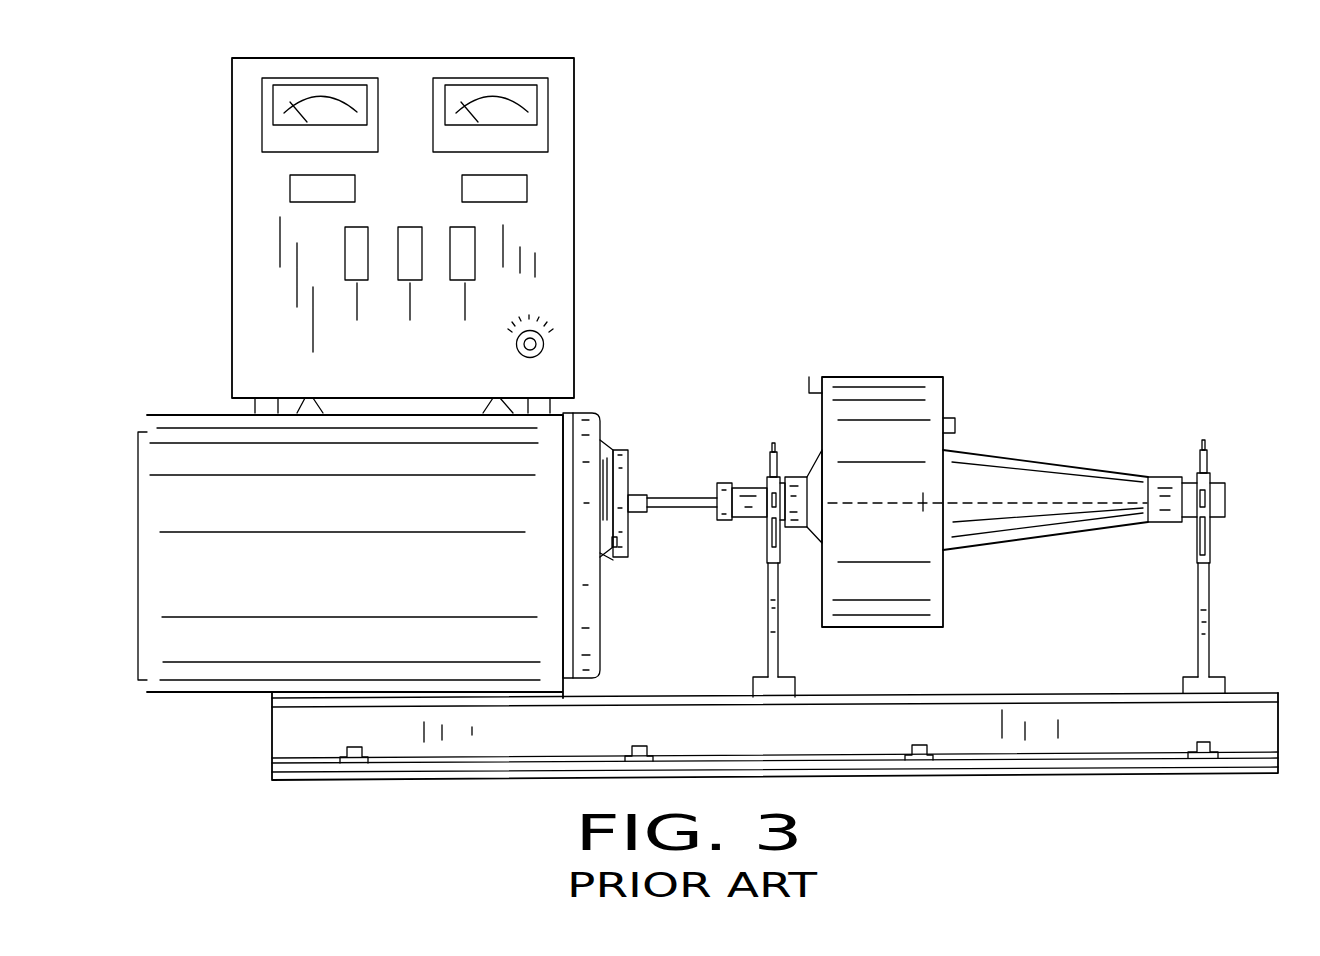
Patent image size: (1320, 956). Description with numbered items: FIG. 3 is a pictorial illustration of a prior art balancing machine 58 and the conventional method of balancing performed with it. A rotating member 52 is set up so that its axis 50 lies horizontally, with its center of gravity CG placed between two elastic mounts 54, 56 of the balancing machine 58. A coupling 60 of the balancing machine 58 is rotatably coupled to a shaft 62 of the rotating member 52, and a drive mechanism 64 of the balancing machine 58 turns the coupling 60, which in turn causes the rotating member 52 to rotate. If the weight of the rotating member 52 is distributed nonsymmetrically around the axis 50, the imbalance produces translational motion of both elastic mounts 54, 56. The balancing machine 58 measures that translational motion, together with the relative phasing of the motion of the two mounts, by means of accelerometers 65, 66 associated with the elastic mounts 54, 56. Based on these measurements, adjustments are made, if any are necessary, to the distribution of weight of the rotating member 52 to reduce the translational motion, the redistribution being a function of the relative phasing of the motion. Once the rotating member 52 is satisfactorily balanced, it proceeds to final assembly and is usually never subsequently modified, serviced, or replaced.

The axis 50 is at (1025, 498).
The rotating member 52 is at (873, 627).
The elastic mount 54 is at (770, 442).
The elastic mount 56 is at (1200, 437).
The balancing machine 58 is at (647, 212).
The coupling 60 is at (688, 505).
The shaft 62 is at (748, 480).
The drive mechanism 64 is at (603, 414).
The accelerometer 65 is at (763, 538).
The accelerometer 66 is at (1212, 552).